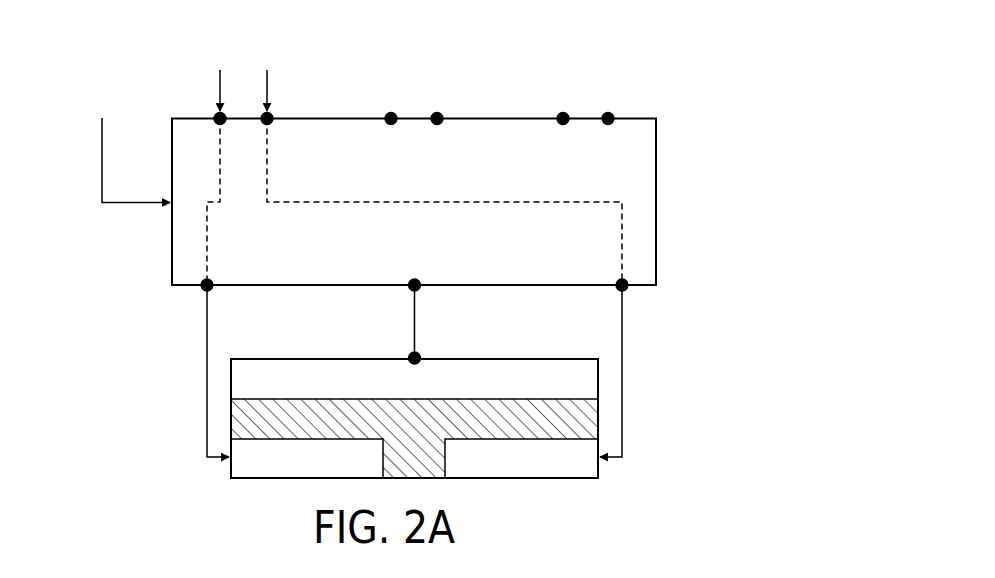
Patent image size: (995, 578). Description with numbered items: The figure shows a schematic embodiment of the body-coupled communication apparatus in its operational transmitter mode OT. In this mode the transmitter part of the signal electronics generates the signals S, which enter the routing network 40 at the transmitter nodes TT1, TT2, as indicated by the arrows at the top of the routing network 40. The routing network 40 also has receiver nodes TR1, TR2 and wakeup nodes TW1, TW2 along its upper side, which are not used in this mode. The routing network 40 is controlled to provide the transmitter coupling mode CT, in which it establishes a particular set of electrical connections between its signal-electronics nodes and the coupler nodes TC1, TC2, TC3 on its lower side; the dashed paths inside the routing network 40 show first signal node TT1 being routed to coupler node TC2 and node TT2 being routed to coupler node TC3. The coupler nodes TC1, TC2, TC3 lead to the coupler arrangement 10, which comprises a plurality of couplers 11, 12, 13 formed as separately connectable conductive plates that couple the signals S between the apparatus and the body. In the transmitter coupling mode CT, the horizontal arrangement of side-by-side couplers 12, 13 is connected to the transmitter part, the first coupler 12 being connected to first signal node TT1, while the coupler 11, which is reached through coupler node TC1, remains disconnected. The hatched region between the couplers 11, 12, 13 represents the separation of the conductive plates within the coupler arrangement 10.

The coupler arrangement 10 is at (180, 405).
The coupler 11 is at (425, 390).
The first coupler 12 is at (316, 470).
The coupler 13 is at (528, 470).
The routing network 40 is at (427, 170).
The operational transmitter mode OT is at (122, 86).
The transmitter coupling mode CT is at (136, 160).
The signals S is at (243, 82).
The first signal node TT1 is at (197, 189).
The transmitter signal node TT2 is at (441, 189).
The receiver signal node TR1 is at (368, 109).
The second signal node TR2 is at (462, 109).
The wakeup signal node TW1 is at (540, 109).
The wakeup signal node TW2 is at (634, 109).
The coupler node TC1 is at (393, 321).
The coupler node TC2 is at (195, 368).
The coupler node TC3 is at (599, 368).